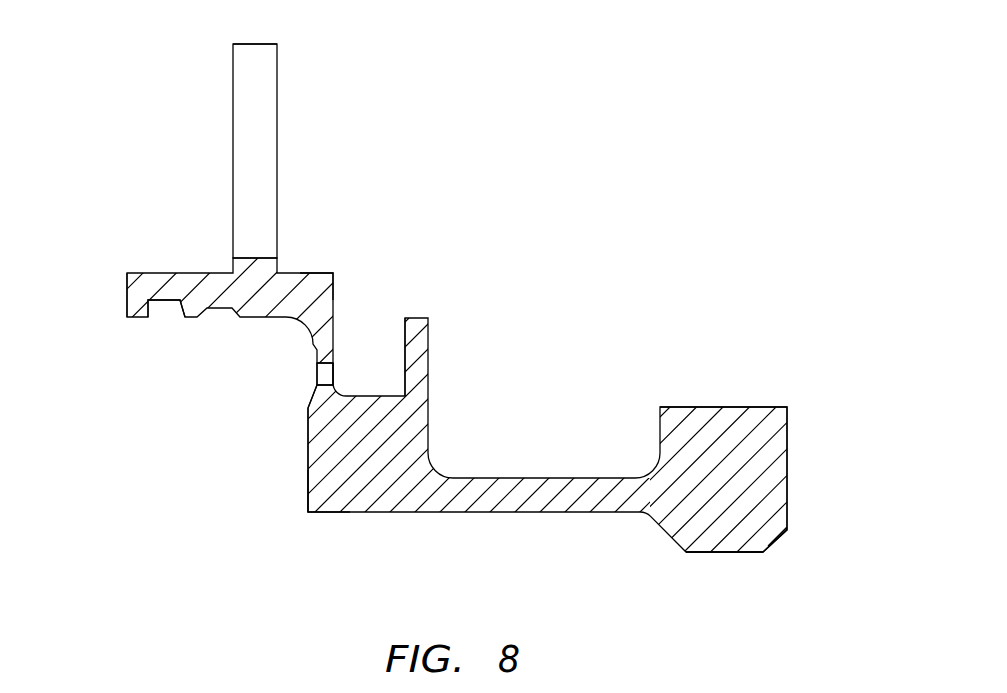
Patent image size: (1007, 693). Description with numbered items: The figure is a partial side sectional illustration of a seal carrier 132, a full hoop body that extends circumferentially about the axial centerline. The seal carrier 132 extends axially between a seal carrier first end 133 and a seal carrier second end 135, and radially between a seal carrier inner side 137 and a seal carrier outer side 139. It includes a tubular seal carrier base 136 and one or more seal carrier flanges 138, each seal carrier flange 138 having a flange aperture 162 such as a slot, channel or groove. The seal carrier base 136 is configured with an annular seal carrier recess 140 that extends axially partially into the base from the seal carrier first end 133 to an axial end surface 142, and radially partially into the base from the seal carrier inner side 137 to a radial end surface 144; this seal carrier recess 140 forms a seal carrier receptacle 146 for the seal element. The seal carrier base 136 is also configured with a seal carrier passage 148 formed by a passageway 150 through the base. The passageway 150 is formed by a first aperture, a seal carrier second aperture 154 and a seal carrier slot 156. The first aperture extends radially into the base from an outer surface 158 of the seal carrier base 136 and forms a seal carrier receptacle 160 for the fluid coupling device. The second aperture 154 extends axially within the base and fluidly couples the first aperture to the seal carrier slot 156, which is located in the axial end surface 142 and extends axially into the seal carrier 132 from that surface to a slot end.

The seal carrier 132 is at (477, 331).
The seal carrier first end 133 is at (127, 287).
The seal carrier second end 135 is at (788, 448).
The seal carrier base 136 is at (292, 475).
The seal carrier inner side 137 is at (715, 553).
The seal carrier flange 138 is at (316, 151).
The seal carrier outer side 139 is at (267, 44).
The seal carrier recess 140 is at (74, 416).
The axial end surface 142 is at (308, 493).
The radial end surface 144 is at (138, 318).
The seal carrier receptacle 146 is at (103, 454).
The seal carrier passage 148 is at (223, 448).
The passageway 150 is at (306, 390).
The seal carrier second aperture 154 is at (325, 375).
The seal carrier slot 156 is at (315, 358).
The outer surface 158 is at (333, 272).
The seal carrier receptacle 160 is at (377, 335).
The flange aperture 162 is at (256, 155).